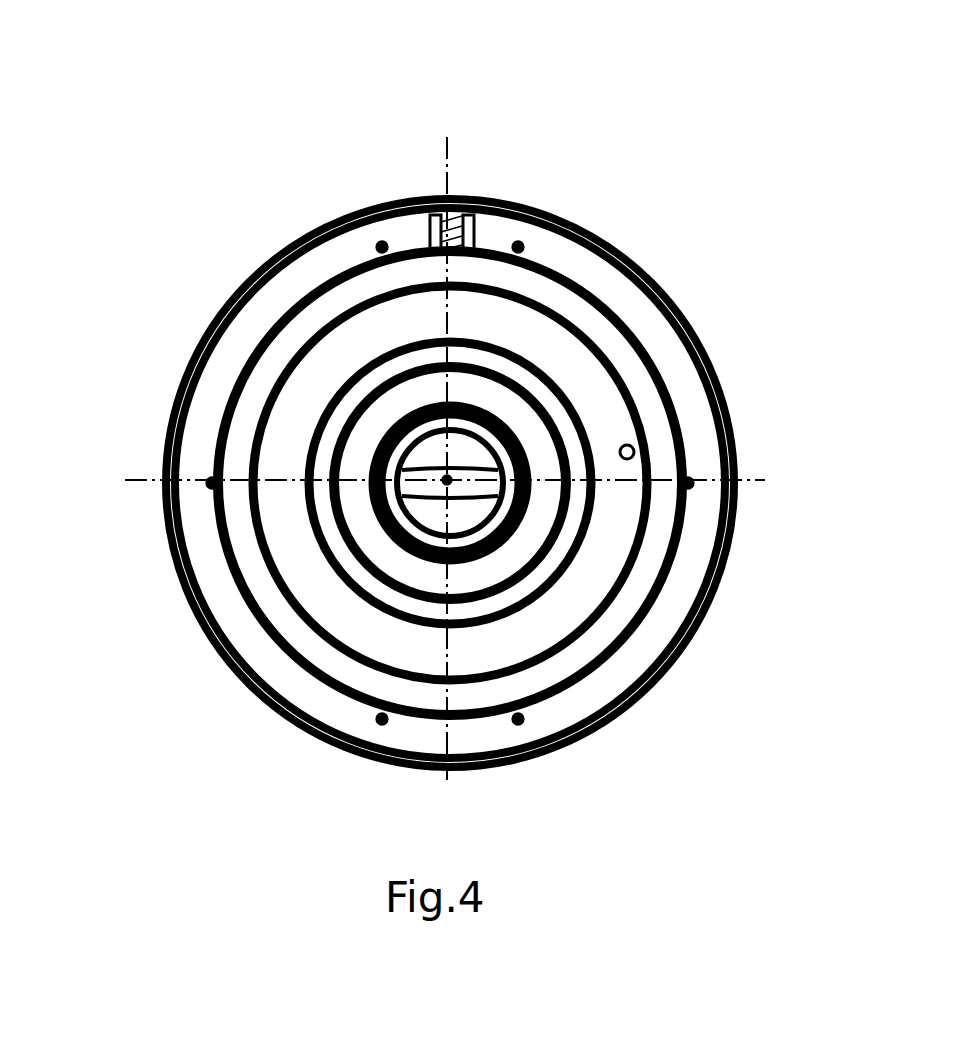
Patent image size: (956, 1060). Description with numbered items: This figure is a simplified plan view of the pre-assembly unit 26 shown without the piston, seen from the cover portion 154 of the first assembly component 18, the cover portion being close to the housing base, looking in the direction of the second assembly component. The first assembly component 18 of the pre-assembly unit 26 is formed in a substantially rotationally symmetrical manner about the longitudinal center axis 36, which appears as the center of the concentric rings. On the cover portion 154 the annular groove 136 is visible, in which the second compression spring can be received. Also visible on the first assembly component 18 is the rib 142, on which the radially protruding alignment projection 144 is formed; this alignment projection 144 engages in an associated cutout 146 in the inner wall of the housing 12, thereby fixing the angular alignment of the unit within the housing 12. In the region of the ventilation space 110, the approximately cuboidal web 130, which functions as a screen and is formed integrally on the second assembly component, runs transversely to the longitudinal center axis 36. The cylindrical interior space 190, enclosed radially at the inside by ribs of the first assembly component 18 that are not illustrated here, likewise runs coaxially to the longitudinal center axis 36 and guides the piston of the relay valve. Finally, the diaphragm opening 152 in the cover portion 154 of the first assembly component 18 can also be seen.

The pre-assembly unit 26 is at (236, 172).
The housing 12 is at (723, 573).
The rib 142 is at (600, 242).
The first assembly component 18 is at (295, 325).
The cover portion 154 is at (510, 327).
The annular groove 136 is at (512, 598).
The cylindrical interior space 190 is at (508, 548).
The web 130 is at (430, 468).
The ventilation space 110 is at (430, 508).
The longitudinal center axis 36 is at (447, 480).
The diaphragm opening 152 is at (630, 440).
The alignment projection 144 is at (503, 205).
The cutout 146 is at (430, 228).